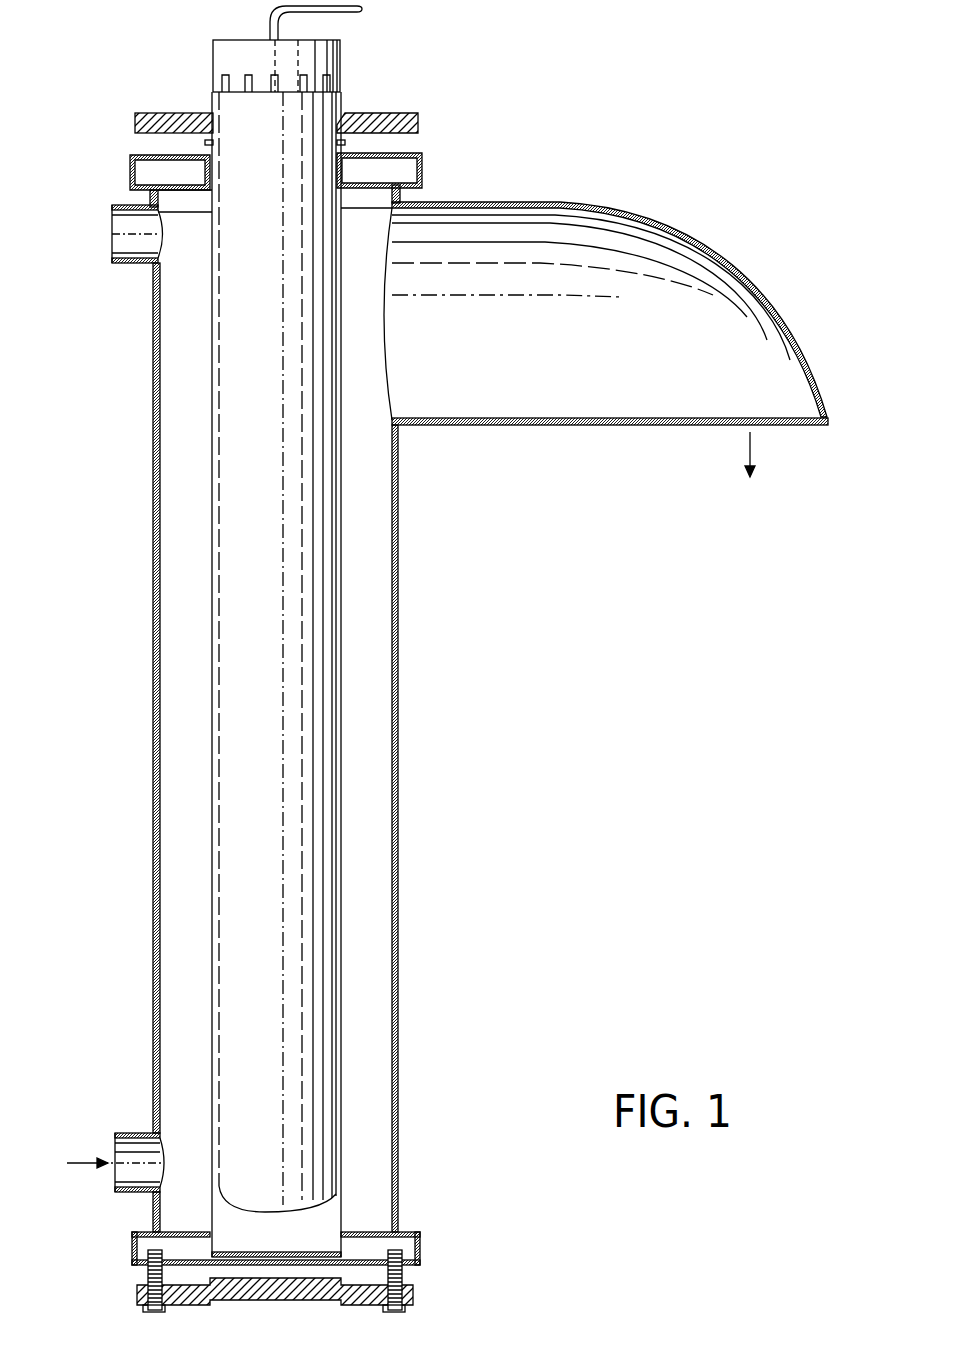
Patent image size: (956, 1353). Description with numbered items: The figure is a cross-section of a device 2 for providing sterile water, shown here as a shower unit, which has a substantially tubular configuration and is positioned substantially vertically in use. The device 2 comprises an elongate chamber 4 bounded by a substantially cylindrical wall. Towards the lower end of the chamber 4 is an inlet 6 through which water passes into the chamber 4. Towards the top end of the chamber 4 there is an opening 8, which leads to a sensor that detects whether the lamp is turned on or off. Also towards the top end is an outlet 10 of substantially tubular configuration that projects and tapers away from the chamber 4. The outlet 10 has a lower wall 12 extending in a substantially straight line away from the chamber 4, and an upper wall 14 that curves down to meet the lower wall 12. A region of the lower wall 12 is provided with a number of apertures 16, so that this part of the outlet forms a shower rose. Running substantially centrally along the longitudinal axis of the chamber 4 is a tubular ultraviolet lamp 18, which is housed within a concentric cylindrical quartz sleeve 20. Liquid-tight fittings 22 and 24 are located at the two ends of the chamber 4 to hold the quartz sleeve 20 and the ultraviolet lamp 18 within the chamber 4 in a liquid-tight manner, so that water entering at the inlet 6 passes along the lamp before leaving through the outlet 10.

The device 2 is at (437, 780).
The chamber 4 is at (398, 987).
The inlet 6 is at (118, 1152).
The opening 8 is at (112, 234).
The outlet 10 is at (673, 220).
The lower wall 12 is at (566, 425).
The upper wall 14 is at (768, 303).
The apertures 16 is at (790, 427).
The ultraviolet lamp 18 is at (240, 656).
The quartz sleeve 20 is at (214, 1228).
The liquid-tight fitting 22 is at (418, 118).
The liquid-tight fitting 24 is at (414, 1290).